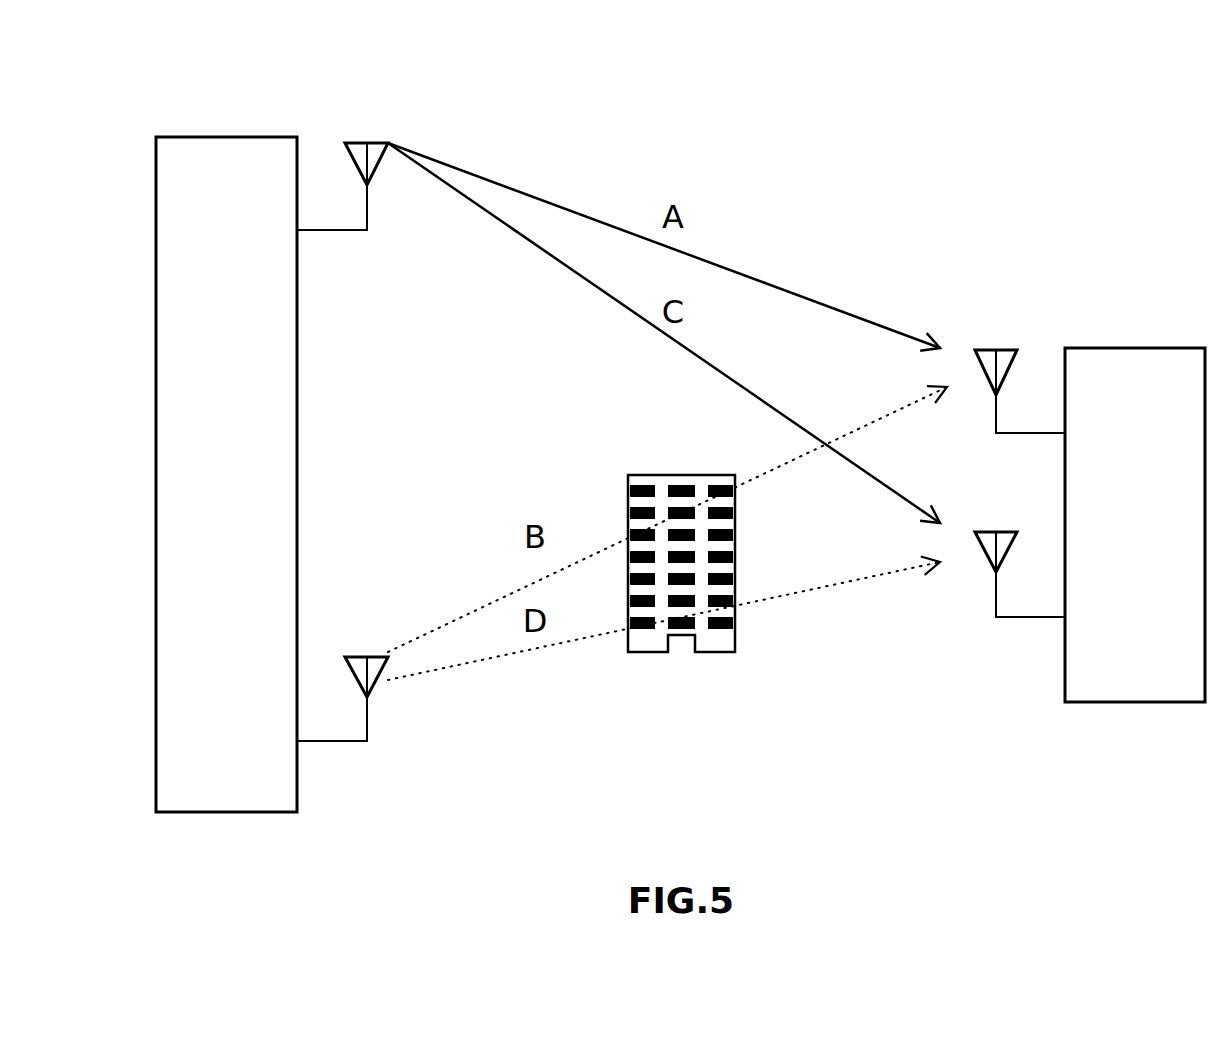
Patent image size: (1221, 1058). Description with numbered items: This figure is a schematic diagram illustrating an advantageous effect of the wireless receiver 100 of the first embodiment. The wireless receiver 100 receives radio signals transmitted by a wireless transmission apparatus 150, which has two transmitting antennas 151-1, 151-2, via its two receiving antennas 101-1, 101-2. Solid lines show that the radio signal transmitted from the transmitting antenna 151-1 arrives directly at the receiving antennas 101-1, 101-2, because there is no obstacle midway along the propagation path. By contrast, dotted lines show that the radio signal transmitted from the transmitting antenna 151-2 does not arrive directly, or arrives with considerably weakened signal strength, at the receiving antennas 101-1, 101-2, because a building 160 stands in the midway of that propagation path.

The wireless transmission apparatus 150 is at (225, 137).
The transmitting antenna 151-1 is at (378, 143).
The transmitting antenna 151-2 is at (378, 657).
The wireless receiver 100 is at (1135, 348).
The receiving antenna 101-1 is at (1000, 350).
The receiving antenna 101-2 is at (1000, 532).
The building 160 is at (695, 652).